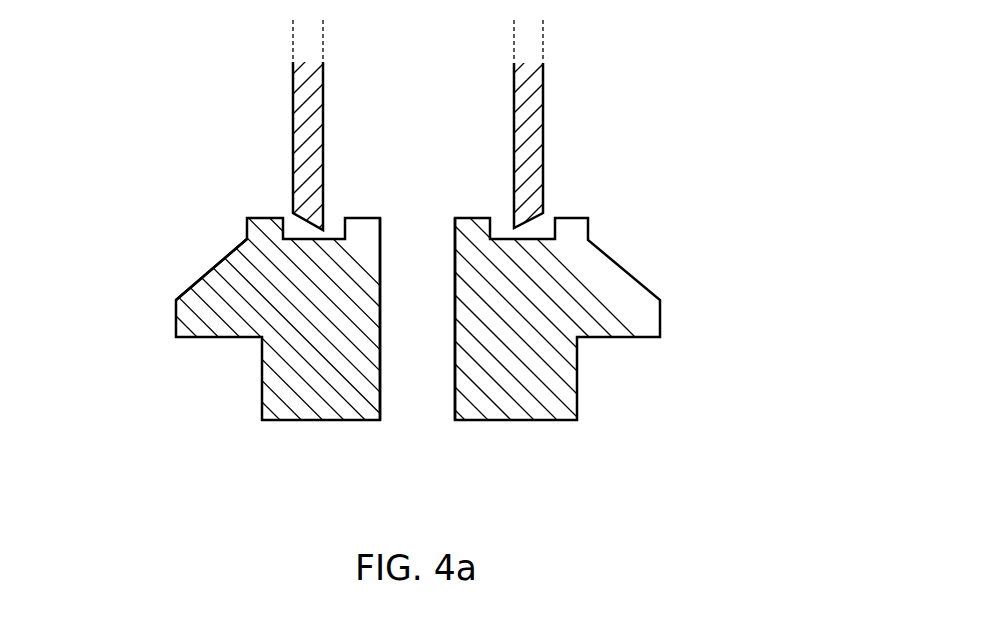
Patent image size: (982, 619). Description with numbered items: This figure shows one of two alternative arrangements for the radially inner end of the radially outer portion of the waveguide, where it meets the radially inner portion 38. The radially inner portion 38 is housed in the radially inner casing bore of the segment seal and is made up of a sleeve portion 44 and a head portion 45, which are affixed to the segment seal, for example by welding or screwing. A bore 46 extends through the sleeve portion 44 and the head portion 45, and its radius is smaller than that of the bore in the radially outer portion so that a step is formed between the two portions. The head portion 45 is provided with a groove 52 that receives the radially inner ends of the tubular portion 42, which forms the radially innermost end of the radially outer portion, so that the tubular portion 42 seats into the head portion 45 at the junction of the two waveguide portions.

The radially inner portion 38 is at (361, 323).
The tubular portion 42 is at (533, 99).
The sleeve portion 44 is at (275, 383).
The head portion 45 is at (200, 296).
The bore 46 is at (420, 410).
The groove 52 is at (545, 224).